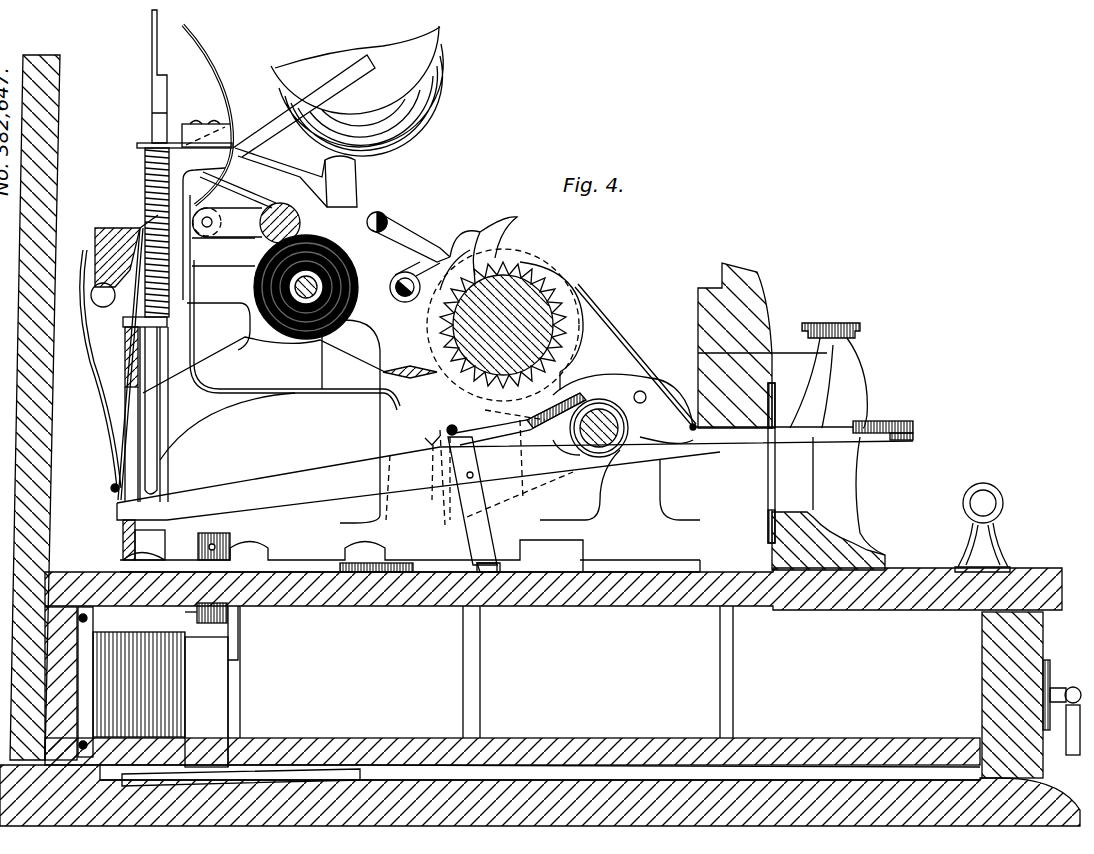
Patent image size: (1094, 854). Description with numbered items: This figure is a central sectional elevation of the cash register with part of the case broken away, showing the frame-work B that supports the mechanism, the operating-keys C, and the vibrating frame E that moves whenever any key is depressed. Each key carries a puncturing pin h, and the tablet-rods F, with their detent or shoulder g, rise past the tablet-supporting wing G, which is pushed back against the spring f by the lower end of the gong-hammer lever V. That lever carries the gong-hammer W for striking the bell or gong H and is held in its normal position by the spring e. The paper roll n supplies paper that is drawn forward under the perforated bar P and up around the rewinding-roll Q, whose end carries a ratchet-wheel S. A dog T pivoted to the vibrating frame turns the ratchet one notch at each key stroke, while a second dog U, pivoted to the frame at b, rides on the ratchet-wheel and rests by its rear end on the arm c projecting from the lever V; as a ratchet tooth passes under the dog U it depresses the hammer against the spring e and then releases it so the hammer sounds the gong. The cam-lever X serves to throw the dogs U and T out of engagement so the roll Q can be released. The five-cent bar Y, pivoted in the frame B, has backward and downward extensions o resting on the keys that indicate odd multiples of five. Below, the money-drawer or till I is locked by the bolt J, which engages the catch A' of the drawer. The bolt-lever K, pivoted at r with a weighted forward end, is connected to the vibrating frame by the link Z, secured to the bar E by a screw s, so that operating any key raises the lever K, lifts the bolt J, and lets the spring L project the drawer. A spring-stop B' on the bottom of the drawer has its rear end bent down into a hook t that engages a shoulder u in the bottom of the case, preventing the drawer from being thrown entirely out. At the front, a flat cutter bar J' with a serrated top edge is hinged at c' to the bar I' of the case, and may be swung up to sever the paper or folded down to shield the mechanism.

The tablet-rods F is at (175, 107).
The gong-hammer lever V is at (150, 175).
The tablet-supporting wing G is at (126, 247).
The spring e is at (130, 364).
The spring f is at (88, 371).
The detent or shoulder g is at (125, 322).
The arm c is at (247, 207).
The gong-hammer W is at (296, 176).
The bell or gong H is at (338, 91).
The roll n is at (441, 346).
The cam-lever X is at (408, 237).
The pivot b is at (415, 292).
The dog U is at (503, 309).
The ratchet-wheel S is at (545, 270).
The rewinding-roll Q is at (503, 325).
The perforated bar P is at (410, 361).
The extensions o is at (230, 327).
The frame-work B is at (421, 345).
The link Z is at (479, 504).
The vibrating frame E is at (477, 455).
The screw or fastening s is at (450, 419).
The puncturing pin or point h is at (422, 435).
The five-cent bar Y is at (520, 419).
The dog T is at (556, 402).
The operating-keys C is at (515, 470).
The hinge c' is at (624, 414).
The cutter bar or blade J' is at (635, 355).
The bar of the case I' is at (791, 416).
The money-drawer or till I is at (553, 673).
The shoulder u is at (540, 795).
The spring-stop B' is at (540, 780).
The hook or detent t is at (132, 781).
The spring L is at (158, 686).
The catch A' is at (185, 615).
The pivot r is at (144, 540).
The bolt J is at (224, 547).
The bolt-lever K is at (410, 554).